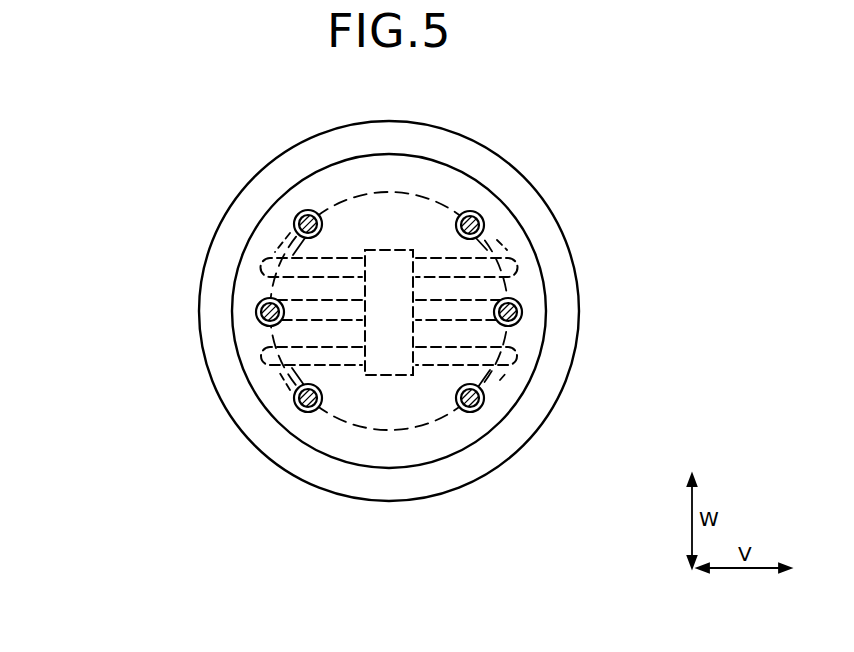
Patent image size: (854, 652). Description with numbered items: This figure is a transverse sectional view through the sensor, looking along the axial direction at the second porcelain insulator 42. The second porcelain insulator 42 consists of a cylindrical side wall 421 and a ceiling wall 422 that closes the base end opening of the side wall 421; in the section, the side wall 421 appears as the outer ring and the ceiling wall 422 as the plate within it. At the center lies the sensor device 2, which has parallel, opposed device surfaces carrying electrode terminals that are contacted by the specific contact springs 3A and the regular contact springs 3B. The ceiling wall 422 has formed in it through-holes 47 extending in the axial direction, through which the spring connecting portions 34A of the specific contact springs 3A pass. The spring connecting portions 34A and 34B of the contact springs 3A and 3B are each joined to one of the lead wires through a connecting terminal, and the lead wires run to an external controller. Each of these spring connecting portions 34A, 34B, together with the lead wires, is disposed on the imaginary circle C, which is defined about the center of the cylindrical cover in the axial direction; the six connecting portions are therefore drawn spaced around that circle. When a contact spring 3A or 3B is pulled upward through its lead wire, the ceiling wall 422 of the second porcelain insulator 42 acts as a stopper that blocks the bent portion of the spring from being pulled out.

The sensor device 2 is at (398, 248).
The imaginary circle C is at (368, 192).
The specific contact spring 3A is at (596, 296).
The spring connecting portion 34A is at (482, 215).
The regular contact spring 3B is at (500, 355).
The spring connecting portion 34B is at (522, 311).
The through-hole 47 is at (296, 213).
The second porcelain insulator 42 is at (309, 319).
The cylindrical side wall 421 is at (345, 483).
The ceiling wall 422 is at (342, 447).